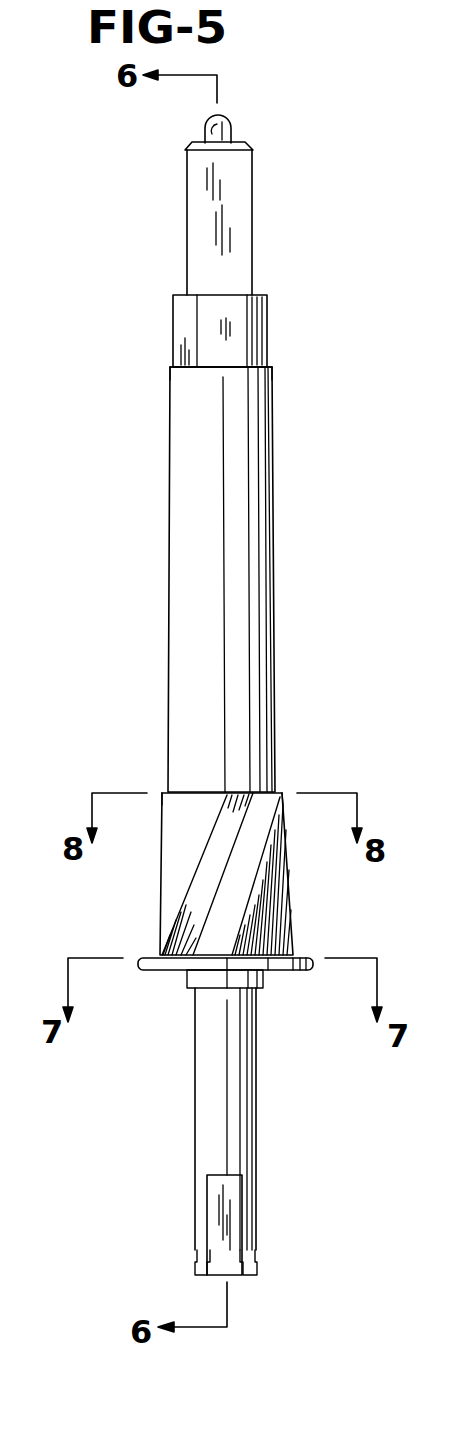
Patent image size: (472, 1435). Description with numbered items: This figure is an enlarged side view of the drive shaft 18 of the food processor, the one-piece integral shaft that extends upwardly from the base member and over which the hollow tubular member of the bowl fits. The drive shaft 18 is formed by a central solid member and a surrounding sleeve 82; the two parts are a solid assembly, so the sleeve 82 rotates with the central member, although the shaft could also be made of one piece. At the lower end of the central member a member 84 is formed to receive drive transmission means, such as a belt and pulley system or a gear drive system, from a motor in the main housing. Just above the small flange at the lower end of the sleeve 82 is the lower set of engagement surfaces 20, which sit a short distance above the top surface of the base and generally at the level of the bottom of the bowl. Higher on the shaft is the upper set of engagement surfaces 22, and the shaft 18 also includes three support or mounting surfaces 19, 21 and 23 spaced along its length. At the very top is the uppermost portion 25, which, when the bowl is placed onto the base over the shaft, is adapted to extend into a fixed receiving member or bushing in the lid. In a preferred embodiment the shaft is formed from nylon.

The drive shaft 18 is at (274, 542).
The support or mounting surface 19 is at (278, 792).
The lower set of engagement surfaces 20 is at (308, 902).
The support or mounting surface 21 is at (268, 365).
The upper set of engagement surfaces 22 is at (280, 331).
The support or mounting surface 23 is at (260, 290).
The uppermost portion 25 is at (233, 133).
The sleeve 82 is at (168, 971).
The member 84 is at (215, 1222).